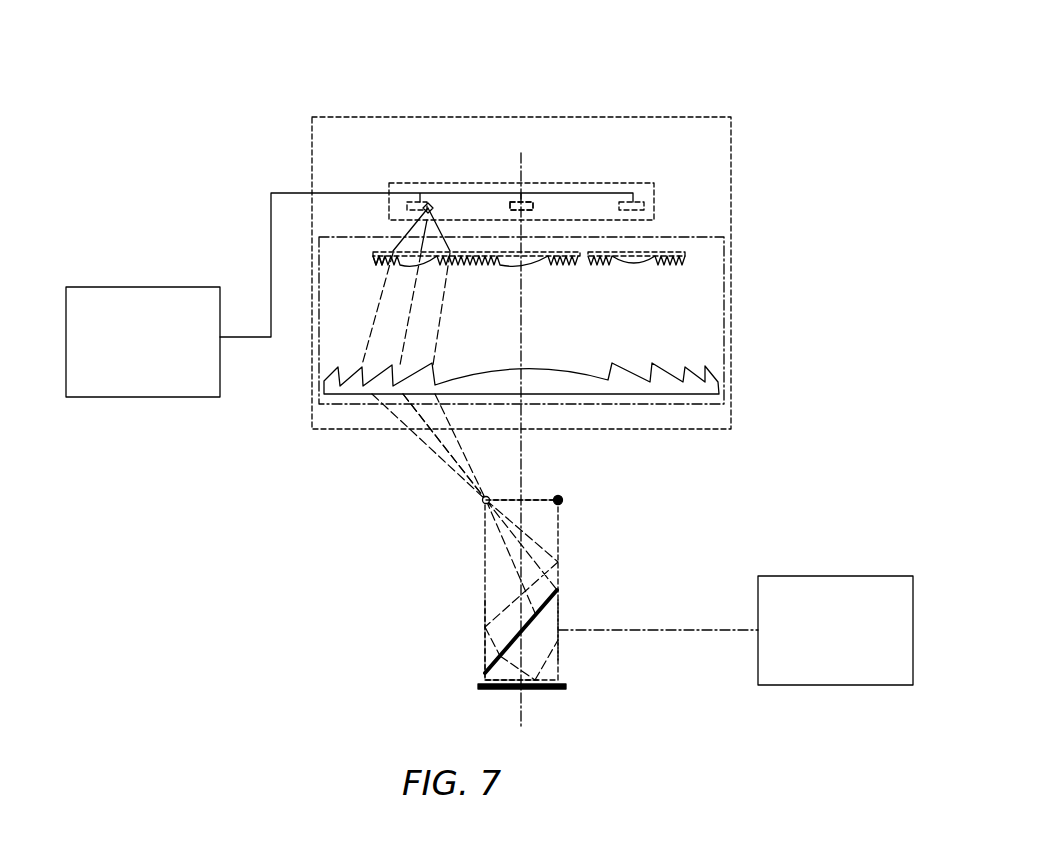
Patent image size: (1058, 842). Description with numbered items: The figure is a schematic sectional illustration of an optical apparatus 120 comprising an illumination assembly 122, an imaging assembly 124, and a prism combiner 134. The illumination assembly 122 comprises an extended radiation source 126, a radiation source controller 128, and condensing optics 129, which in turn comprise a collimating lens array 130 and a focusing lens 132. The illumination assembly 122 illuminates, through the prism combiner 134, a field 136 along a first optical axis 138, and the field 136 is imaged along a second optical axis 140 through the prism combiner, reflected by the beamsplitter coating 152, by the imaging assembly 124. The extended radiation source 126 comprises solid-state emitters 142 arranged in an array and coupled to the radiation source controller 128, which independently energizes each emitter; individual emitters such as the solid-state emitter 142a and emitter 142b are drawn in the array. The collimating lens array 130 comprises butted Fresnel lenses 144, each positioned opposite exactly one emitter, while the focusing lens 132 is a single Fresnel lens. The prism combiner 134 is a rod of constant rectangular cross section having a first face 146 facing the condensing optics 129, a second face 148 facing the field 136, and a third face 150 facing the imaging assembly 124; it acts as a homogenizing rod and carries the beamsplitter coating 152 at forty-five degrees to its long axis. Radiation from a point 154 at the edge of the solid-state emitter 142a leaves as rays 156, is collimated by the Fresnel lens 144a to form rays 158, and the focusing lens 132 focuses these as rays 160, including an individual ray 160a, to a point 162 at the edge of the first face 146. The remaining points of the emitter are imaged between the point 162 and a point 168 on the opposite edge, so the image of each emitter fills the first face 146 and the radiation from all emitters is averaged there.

The optical apparatus 120 is at (765, 95).
The illumination assembly 122 is at (312, 416).
The imaging assembly 124 is at (853, 576).
The extended radiation source 126 is at (645, 183).
The radiation source controller 128 is at (142, 287).
The condensing optics 129 is at (723, 324).
The collimating lens array 130 is at (640, 278).
The focusing lens 132 is at (720, 372).
The prism combiner 134 is at (488, 562).
The field 136 is at (478, 686).
The first optical axis 138 is at (522, 330).
The second optical axis 140 is at (610, 630).
The solid-state emitters 142 is at (512, 202).
The solid-state emitter 142a is at (423, 202).
The second radiation source 142b is at (533, 202).
The Fresnel lenses 144 is at (556, 266).
The Fresnel lens 144a is at (373, 257).
The first face 146 is at (530, 500).
The second face 148 is at (486, 679).
The third face 150 is at (558, 632).
The beamsplitter coating 152 is at (492, 665).
The point 154 is at (432, 204).
The rays 156 is at (398, 234).
The rays 158 is at (407, 323).
The rays 160 is at (433, 450).
The converging ray 160a is at (408, 408).
The point 162 is at (482, 501).
The point 168 is at (562, 500).